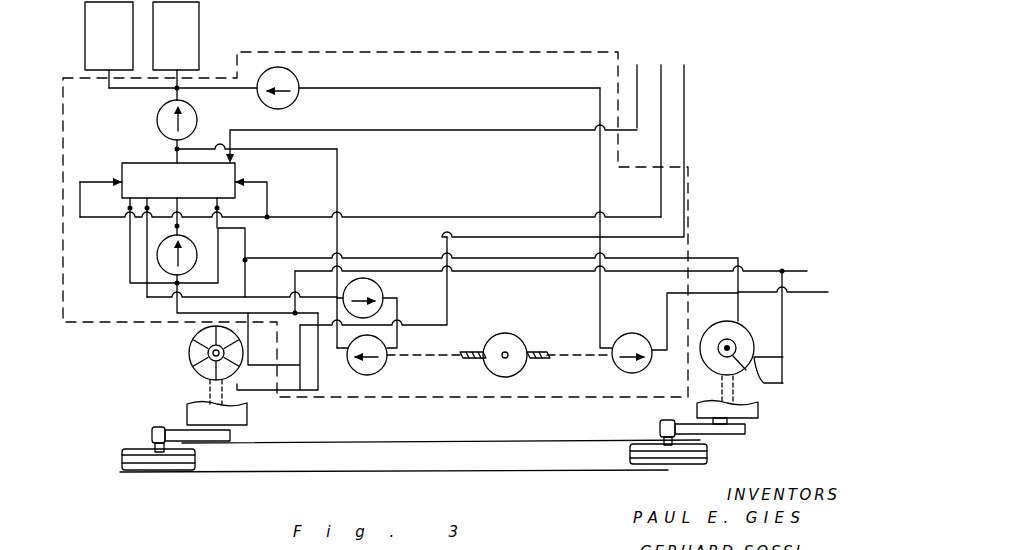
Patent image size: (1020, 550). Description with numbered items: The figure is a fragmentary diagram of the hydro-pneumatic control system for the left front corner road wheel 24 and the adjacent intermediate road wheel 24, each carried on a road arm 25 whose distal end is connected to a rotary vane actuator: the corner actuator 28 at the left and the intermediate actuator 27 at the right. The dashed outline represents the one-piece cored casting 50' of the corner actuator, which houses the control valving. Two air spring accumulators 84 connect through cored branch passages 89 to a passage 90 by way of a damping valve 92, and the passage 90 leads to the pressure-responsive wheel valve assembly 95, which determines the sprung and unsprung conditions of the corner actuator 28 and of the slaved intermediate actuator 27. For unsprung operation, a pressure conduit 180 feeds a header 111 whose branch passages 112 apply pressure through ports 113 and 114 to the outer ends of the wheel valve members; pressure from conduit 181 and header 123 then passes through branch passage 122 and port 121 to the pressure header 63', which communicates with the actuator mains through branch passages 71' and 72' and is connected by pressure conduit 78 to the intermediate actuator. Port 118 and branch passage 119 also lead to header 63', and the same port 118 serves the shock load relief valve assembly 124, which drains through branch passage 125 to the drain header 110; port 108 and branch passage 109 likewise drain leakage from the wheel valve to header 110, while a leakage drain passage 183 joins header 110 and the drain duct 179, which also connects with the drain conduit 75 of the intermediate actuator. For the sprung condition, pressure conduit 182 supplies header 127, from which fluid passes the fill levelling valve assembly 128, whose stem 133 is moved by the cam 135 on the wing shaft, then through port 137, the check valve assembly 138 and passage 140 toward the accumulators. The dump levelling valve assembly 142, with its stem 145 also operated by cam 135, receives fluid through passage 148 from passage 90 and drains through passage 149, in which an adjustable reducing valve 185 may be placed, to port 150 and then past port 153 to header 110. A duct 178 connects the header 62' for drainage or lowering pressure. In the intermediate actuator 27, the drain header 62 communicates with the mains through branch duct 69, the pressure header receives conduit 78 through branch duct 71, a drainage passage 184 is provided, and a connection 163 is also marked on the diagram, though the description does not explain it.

The road wheel 24 is at (140, 488).
The road arm 25 is at (168, 432).
The rotary vane actuator 27 is at (760, 345).
The rotary vane actuator 28 is at (177, 406).
The one-piece solid cored casting 50' is at (375, 210).
The drain header 62 is at (758, 327).
The header 62' is at (230, 353).
The pressure header 63' is at (308, 244).
The branch duct 69 is at (793, 370).
The branch duct 71 is at (711, 305).
The branch passage 71' is at (183, 340).
The branch passage 72' is at (205, 328).
The drain conduit 75 is at (797, 268).
The hydraulic pressure conduit 78 is at (722, 259).
The hydro-pneumatic air spring accumulator 84 is at (128, 48).
The cored branch passage 89 is at (173, 79).
The passage 90 is at (175, 157).
The damping valve 92 is at (197, 113).
The main control or wheel valve assembly 95 is at (195, 190).
The port 108 is at (250, 208).
The connecting branch passage 109 is at (129, 243).
The drain header 110 is at (247, 322).
The header 111 is at (256, 223).
The branch connecting passage 112 is at (92, 206).
The port 113 is at (103, 180).
The port 114 is at (258, 181).
The port 118 is at (216, 208).
The connecting branch passage 119 is at (250, 244).
The port 121 is at (257, 137).
The connecting branch passage 122 is at (304, 129).
The hydraulic pressure header 123 is at (598, 134).
The shock load relief valve assembly 124 is at (157, 256).
The connecting branch passage 125 is at (173, 281).
The header 127 is at (667, 298).
The fill levelling valve assembly 128 is at (614, 362).
The actuating and guide stem 133 is at (541, 351).
The cam 135 is at (496, 367).
The port 137 is at (599, 297).
The check valve assembly 138 is at (296, 82).
The passage 140 is at (250, 87).
The dump levelling valve assembly 142 is at (368, 376).
The control stem 145 is at (469, 350).
The passage 148 is at (341, 247).
The passage 149 is at (266, 296).
The port 150 is at (163, 247).
The port 153 is at (128, 208).
The conductor 163 is at (738, 285).
The duct 178 is at (686, 119).
The drain duct 179 is at (308, 286).
The pressure conduit 180 is at (663, 76).
The pressure conduit 181 is at (640, 76).
The pressure conduit 182 is at (810, 292).
The leakage drain passage 183 is at (248, 406).
The drainage passage 184 is at (776, 384).
The adjustable reducing valve 185 is at (385, 293).